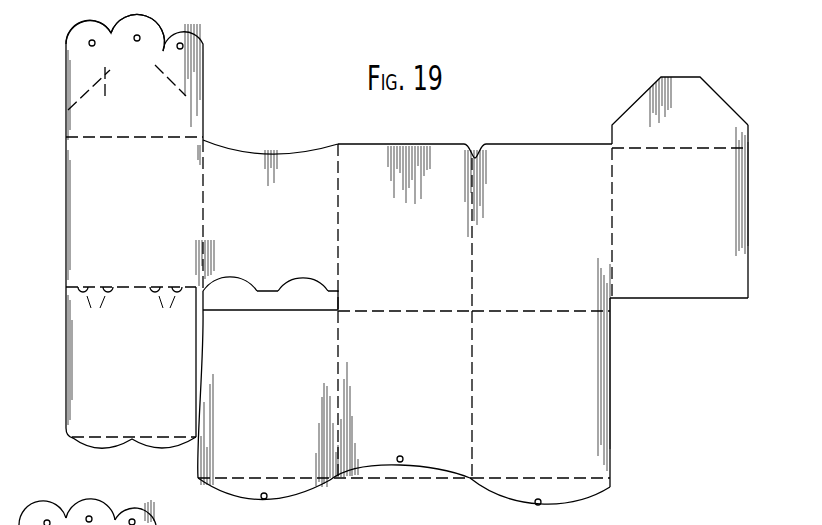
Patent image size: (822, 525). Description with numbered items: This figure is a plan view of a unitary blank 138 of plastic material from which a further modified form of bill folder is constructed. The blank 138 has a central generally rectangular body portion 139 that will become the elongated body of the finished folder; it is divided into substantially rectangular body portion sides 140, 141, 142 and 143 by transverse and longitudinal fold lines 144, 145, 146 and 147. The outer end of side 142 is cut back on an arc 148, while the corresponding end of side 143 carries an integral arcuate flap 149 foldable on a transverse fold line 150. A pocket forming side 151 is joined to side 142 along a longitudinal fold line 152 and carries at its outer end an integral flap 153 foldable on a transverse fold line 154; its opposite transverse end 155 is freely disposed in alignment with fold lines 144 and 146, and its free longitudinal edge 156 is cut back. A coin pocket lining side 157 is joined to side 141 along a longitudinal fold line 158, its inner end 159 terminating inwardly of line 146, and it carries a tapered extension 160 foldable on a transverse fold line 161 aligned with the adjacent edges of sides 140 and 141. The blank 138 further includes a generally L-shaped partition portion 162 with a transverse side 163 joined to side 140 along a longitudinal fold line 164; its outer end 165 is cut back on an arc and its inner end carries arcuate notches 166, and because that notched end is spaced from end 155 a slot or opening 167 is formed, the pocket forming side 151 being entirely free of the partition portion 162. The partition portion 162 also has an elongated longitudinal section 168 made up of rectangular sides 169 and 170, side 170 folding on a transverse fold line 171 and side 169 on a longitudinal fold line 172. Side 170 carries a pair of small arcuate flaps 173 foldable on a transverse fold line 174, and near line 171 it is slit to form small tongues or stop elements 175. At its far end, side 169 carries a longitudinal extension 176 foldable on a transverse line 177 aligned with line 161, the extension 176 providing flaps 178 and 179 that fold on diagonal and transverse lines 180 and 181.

The unitary blank 138 is at (531, 145).
The central generally rectangular body portion 139 is at (441, 161).
The body portion side 140 is at (421, 233).
The body portion side 141 is at (553, 240).
The body portion side 142 is at (416, 395).
The body portion side 143 is at (551, 395).
The fold line 144 is at (400, 311).
The fold line 145 is at (475, 270).
The fold line 146 is at (553, 312).
The fold line 147 is at (475, 430).
The arc 148 is at (386, 470).
The arcuate flap 149 is at (567, 495).
The transverse fold line 150 is at (520, 483).
The pocket forming side 151 is at (272, 393).
The longitudinal fold line 152 is at (336, 350).
The flap 153 is at (285, 495).
The transverse fold line 154 is at (240, 480).
The transverse end 155 is at (243, 311).
The free longitudinal edge 156 is at (210, 413).
The coin pocket lining side 157 is at (690, 232).
The longitudinal fold line 158 is at (614, 258).
The inner end 159 is at (683, 299).
The tapered extension 160 is at (718, 110).
The transverse fold line 161 is at (713, 150).
The L-shaped partition portion 162 is at (81, 209).
The transverse side 163 is at (278, 225).
The longitudinal fold line 164 is at (340, 203).
The outer end 165 is at (270, 150).
The arcuate notches 166 is at (297, 276).
The slot or opening 167 is at (303, 298).
The elongated longitudinal section 168 is at (74, 263).
The partition portion side 169 is at (145, 228).
The partition portion side 170 is at (135, 366).
The transverse fold line 171 is at (120, 287).
The longitudinal fold line 172 is at (205, 186).
The small arcuate flaps 173 is at (143, 445).
The transverse fold line 174 is at (66, 428).
The stop elements 175 is at (130, 308).
The longitudinal extension 176 is at (152, 101).
The transverse line 177 is at (105, 138).
The flap 178 is at (78, 57).
The flap 179 is at (152, 40).
The diagonal line 180 is at (93, 85).
The transverse line 181 is at (119, 66).